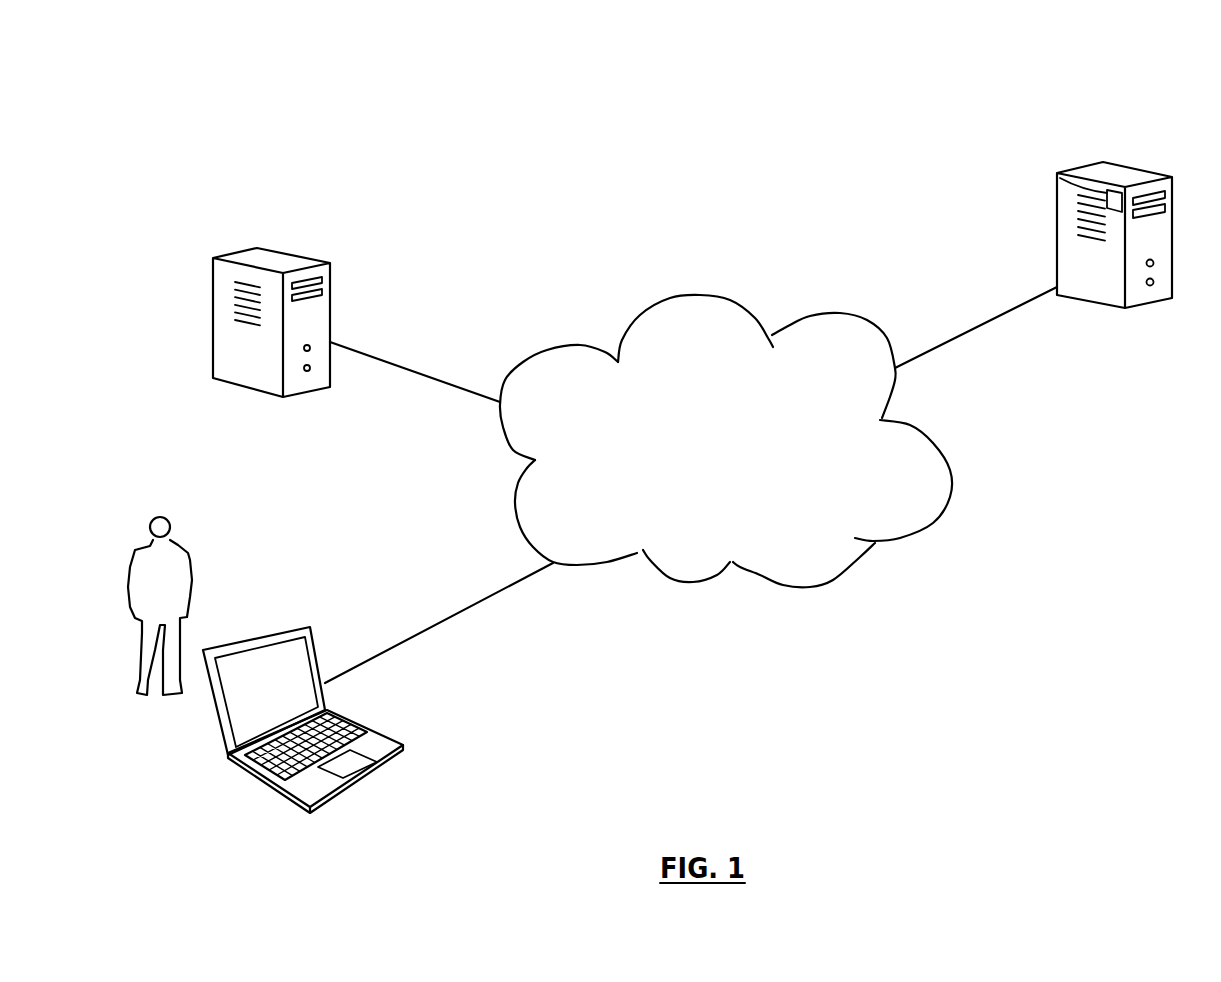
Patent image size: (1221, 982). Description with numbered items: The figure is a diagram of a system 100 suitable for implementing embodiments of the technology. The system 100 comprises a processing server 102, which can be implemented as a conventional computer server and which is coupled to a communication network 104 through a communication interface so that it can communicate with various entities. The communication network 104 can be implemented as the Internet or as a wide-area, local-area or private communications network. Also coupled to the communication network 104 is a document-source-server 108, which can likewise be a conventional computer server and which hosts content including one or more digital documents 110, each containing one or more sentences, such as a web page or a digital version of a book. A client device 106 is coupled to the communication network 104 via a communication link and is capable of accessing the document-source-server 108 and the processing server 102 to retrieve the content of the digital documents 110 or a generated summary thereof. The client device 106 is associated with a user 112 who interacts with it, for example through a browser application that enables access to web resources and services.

The system 100 is at (1056, 106).
The processing server 102 is at (238, 388).
The communication network 104 is at (731, 453).
The client device 106 is at (377, 728).
The document-source-server 108 is at (1098, 307).
The digital document 110 is at (1057, 176).
The user 112 is at (188, 552).